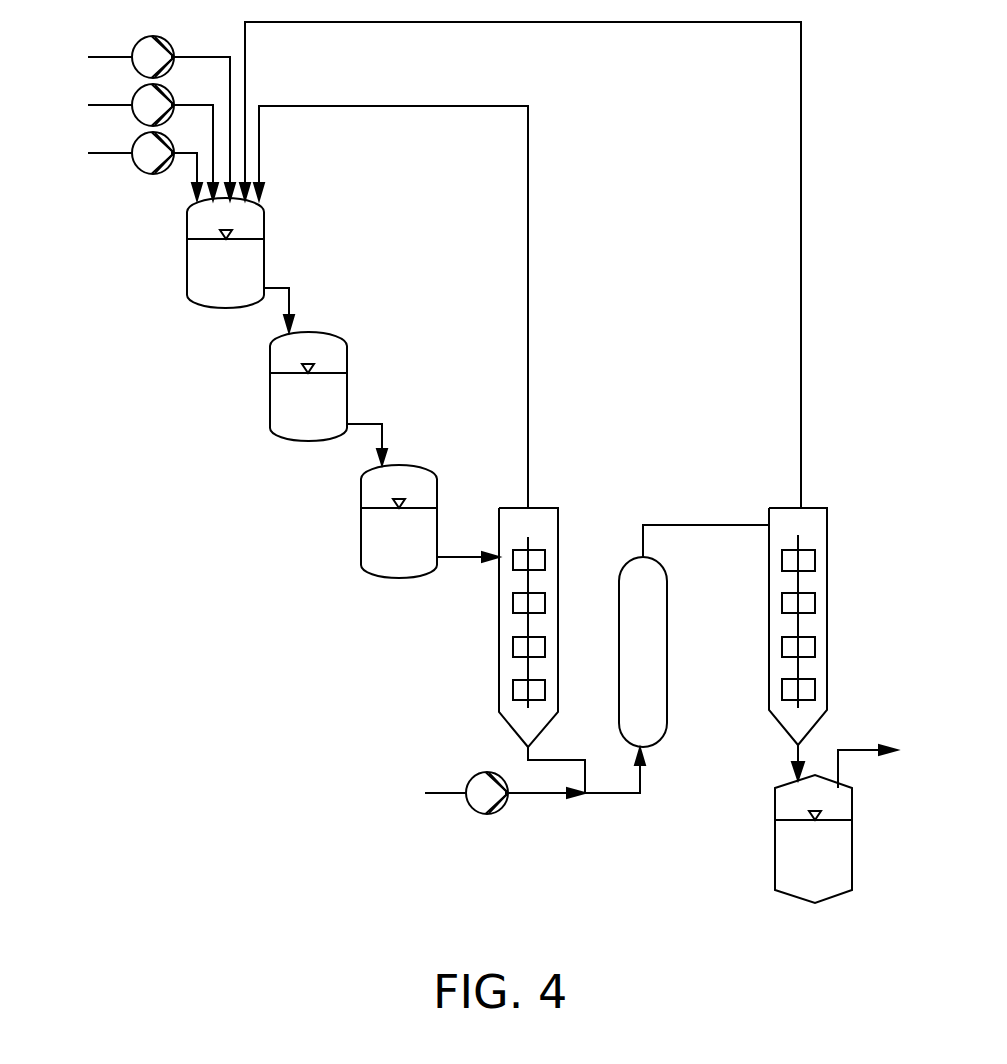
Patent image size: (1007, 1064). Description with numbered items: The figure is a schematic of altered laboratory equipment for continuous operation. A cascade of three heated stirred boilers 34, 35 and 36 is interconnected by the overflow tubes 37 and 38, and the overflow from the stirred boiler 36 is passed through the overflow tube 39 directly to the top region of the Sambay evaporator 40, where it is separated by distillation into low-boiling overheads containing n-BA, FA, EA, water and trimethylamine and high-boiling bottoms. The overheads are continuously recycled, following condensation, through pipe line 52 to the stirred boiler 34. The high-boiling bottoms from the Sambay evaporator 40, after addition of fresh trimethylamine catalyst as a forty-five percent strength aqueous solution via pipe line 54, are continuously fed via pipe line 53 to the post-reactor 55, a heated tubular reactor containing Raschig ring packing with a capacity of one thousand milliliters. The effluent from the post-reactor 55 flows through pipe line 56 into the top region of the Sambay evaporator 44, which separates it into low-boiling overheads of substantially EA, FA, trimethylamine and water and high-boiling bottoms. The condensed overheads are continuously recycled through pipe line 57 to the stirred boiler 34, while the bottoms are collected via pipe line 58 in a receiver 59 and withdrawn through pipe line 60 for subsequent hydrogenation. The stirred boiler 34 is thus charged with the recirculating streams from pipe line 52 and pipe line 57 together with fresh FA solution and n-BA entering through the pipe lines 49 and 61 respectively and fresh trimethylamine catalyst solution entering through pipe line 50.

The pipe line 61 is at (102, 57).
The pipe line 49 is at (102, 105).
The pipe line 50 is at (102, 153).
The stirred boiler 34 is at (211, 286).
The stirred boiler 35 is at (293, 421).
The stirred boiler 36 is at (381, 556).
The overflow tube 37 is at (287, 288).
The overflow tube 38 is at (368, 424).
The overflow tube 39 is at (460, 557).
The Sambay evaporator 40 is at (498, 670).
The pipe line 52 is at (529, 290).
The pipe line 57 is at (801, 283).
The post-reactor 55 is at (629, 662).
The pipe line 56 is at (694, 525).
The pipe line 53 is at (572, 760).
The pipe line 54 is at (535, 795).
The Sambay evaporator 44 is at (828, 668).
The pipe line 58 is at (797, 756).
The receiver 59 is at (798, 869).
The pipe line 60 is at (853, 752).